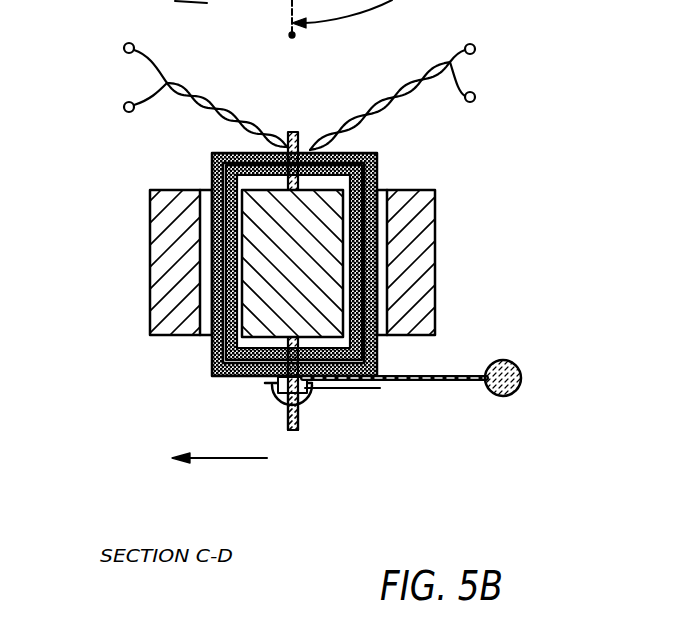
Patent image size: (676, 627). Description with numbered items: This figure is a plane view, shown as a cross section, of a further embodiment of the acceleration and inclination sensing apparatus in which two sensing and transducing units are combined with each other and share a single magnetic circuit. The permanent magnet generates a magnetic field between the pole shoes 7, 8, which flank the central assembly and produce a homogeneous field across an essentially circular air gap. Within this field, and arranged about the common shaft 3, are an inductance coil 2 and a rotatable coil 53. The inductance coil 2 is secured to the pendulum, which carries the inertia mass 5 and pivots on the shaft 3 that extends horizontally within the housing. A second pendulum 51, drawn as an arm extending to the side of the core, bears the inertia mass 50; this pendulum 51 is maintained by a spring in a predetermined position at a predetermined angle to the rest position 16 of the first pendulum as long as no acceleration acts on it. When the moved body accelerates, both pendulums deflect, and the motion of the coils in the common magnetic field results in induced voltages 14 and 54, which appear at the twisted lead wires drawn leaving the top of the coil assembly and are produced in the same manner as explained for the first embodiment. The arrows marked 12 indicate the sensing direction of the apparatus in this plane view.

The inductance coil 2 is at (213, 356).
The shaft 3 is at (296, 131).
The inertia mass 5 is at (312, 408).
The pole shoe 7 is at (166, 234).
The pole shoe 8 is at (424, 240).
The X direction axis 12 is at (228, 0).
The induced voltage 14 is at (490, 88).
The rest position 16 is at (292, 36).
The inertia mass 50 is at (509, 367).
The pendulum 51 is at (441, 381).
The rotatable coil 53 is at (378, 153).
The induced voltage 54 is at (105, 92).